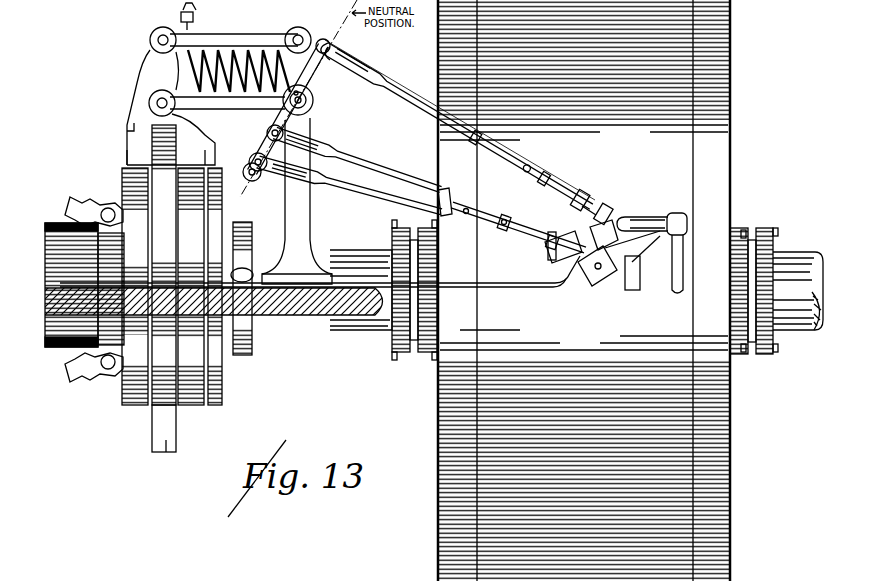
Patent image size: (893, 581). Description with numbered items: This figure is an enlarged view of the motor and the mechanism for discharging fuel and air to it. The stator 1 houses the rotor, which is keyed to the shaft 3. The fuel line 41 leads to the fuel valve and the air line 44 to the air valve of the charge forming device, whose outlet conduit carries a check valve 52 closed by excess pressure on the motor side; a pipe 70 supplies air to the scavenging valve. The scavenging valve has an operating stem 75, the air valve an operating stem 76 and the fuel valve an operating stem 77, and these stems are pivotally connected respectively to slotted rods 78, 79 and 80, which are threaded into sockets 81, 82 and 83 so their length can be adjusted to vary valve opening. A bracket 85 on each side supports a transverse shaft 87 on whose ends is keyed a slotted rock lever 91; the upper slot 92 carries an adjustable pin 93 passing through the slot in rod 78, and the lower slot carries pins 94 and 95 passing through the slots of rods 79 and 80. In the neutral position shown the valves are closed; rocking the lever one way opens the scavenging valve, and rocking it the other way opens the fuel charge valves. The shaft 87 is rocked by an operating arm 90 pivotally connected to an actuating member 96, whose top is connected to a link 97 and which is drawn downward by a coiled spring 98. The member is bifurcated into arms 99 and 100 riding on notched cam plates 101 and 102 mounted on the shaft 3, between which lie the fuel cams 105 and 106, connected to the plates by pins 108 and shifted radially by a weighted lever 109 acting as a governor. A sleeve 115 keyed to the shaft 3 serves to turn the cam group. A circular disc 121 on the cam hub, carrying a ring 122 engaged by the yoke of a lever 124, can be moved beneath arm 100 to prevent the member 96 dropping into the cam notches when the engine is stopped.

The stator 1 is at (745, 82).
The shaft 3 is at (365, 331).
The fuel line 41 is at (458, 288).
The air line 44 is at (625, 290).
The check valve 52 is at (756, 575).
The pipe 70 is at (690, 247).
The operating stem 75 is at (568, 187).
The operating stem 76 is at (520, 244).
The operating stem 77 is at (548, 265).
The rod 78 is at (408, 98).
The rod 79 is at (369, 200).
The rod 80 is at (378, 175).
The socket 81 is at (508, 153).
The socket 82 is at (447, 228).
The socket 83 is at (495, 218).
The bracket 85 is at (305, 201).
The shaft 87 is at (320, 120).
The operating arm 90 is at (222, 98).
The rock lever 91 is at (312, 101).
The slot 92 is at (322, 82).
The pin 93 is at (322, 39).
The pin 94 is at (250, 154).
The pin 95 is at (266, 131).
The actuating member 96 is at (138, 108).
The link 97 is at (231, 35).
The coiled spring 98 is at (196, 18).
The arm 99 is at (130, 152).
The arm 100 is at (201, 154).
The cam plate 101 is at (122, 406).
The cam plate 102 is at (195, 408).
The fuel cam 105 is at (127, 132).
The fuel cam 106 is at (177, 451).
The pin 108 is at (92, 376).
The weighted lever 109 is at (86, 203).
The sleeve 115 is at (62, 350).
The circular disc 121 is at (224, 389).
The ring 122 is at (253, 352).
The lever 124 is at (246, 267).